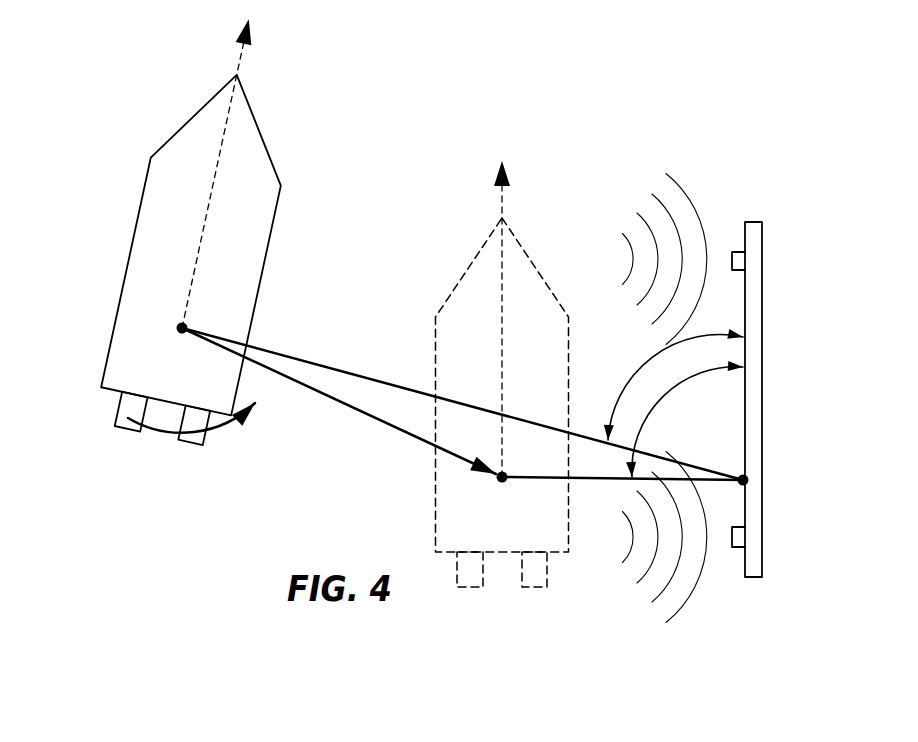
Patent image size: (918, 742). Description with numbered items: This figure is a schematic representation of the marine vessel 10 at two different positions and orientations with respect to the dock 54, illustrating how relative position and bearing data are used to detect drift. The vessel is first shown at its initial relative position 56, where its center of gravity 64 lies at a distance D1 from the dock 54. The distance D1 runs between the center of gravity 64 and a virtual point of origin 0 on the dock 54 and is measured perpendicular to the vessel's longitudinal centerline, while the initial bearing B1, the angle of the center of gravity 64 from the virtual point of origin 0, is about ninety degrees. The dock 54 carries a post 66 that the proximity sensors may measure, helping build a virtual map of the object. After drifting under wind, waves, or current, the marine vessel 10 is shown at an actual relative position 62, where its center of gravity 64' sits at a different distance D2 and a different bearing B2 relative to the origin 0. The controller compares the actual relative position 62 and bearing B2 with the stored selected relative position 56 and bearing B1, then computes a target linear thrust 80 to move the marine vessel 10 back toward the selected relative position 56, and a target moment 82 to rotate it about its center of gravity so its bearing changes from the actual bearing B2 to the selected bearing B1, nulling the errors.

The marine vessel 10 is at (315, 296).
The actual relative position 62 is at (188, 227).
The initial relative position 56 is at (481, 374).
The center of gravity 64 is at (435, 502).
The center of gravity 64' is at (120, 341).
The target linear thrust 80 is at (353, 408).
The target moment 82 is at (218, 432).
The virtual point of origin 0 is at (750, 481).
The dock 54 is at (763, 407).
The post 66 is at (732, 259).
The distance D1 is at (593, 481).
The distance D2 is at (386, 380).
The initial bearing B1 is at (688, 379).
The bearing B2 is at (655, 370).